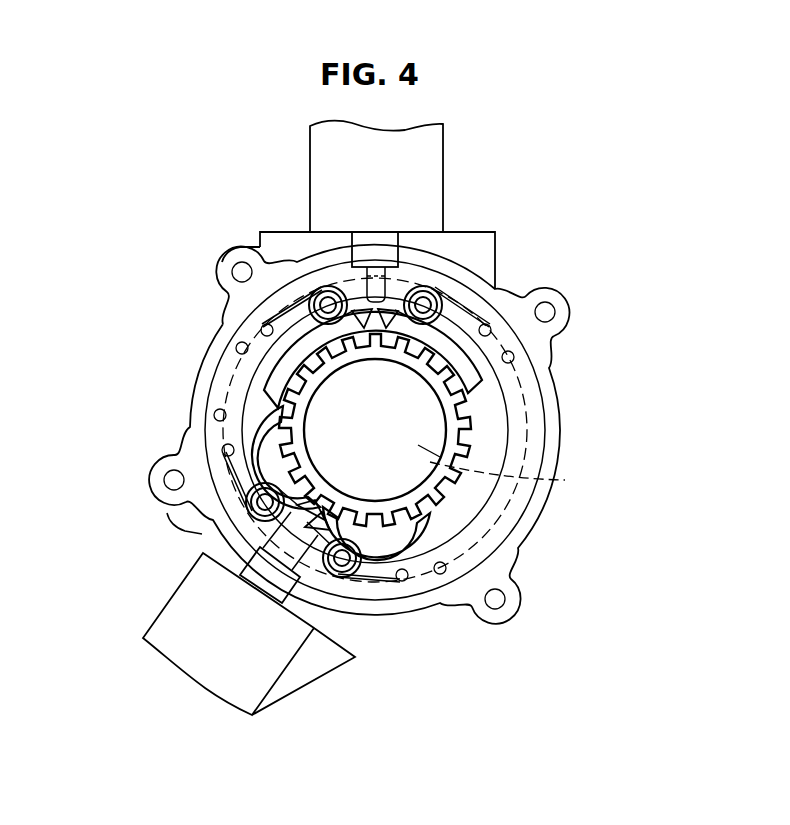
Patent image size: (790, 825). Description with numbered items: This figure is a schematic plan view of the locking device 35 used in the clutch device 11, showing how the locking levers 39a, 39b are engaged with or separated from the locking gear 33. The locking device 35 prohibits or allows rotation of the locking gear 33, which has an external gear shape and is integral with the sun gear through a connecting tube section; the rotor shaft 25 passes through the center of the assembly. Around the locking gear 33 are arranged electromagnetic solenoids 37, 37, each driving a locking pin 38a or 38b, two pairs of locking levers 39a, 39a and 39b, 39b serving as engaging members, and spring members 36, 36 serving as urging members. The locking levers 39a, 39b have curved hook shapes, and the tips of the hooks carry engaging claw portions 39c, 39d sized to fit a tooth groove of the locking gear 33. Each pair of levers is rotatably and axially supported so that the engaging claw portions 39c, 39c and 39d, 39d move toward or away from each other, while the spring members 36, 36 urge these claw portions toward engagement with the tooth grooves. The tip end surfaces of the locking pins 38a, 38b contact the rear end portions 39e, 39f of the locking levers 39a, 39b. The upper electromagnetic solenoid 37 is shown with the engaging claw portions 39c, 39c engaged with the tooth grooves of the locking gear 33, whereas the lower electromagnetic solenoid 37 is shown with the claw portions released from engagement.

The clutch device 11 is at (574, 374).
The rotor shaft 25 is at (420, 447).
The locking gear 33 is at (452, 436).
The locking device 35 is at (361, 384).
The spring member 36 is at (298, 310).
The electromagnetic solenoid 37 is at (444, 162).
The locking pin 38a is at (392, 284).
The locking pin 38b is at (283, 604).
The locking lever 39a is at (268, 340).
The locking lever 39b is at (236, 440).
The engaging claw portion 39c is at (285, 378).
The engaging claw portion 39d is at (290, 425).
The rear end portion 39e is at (330, 290).
The rear end portion 39f is at (240, 533).